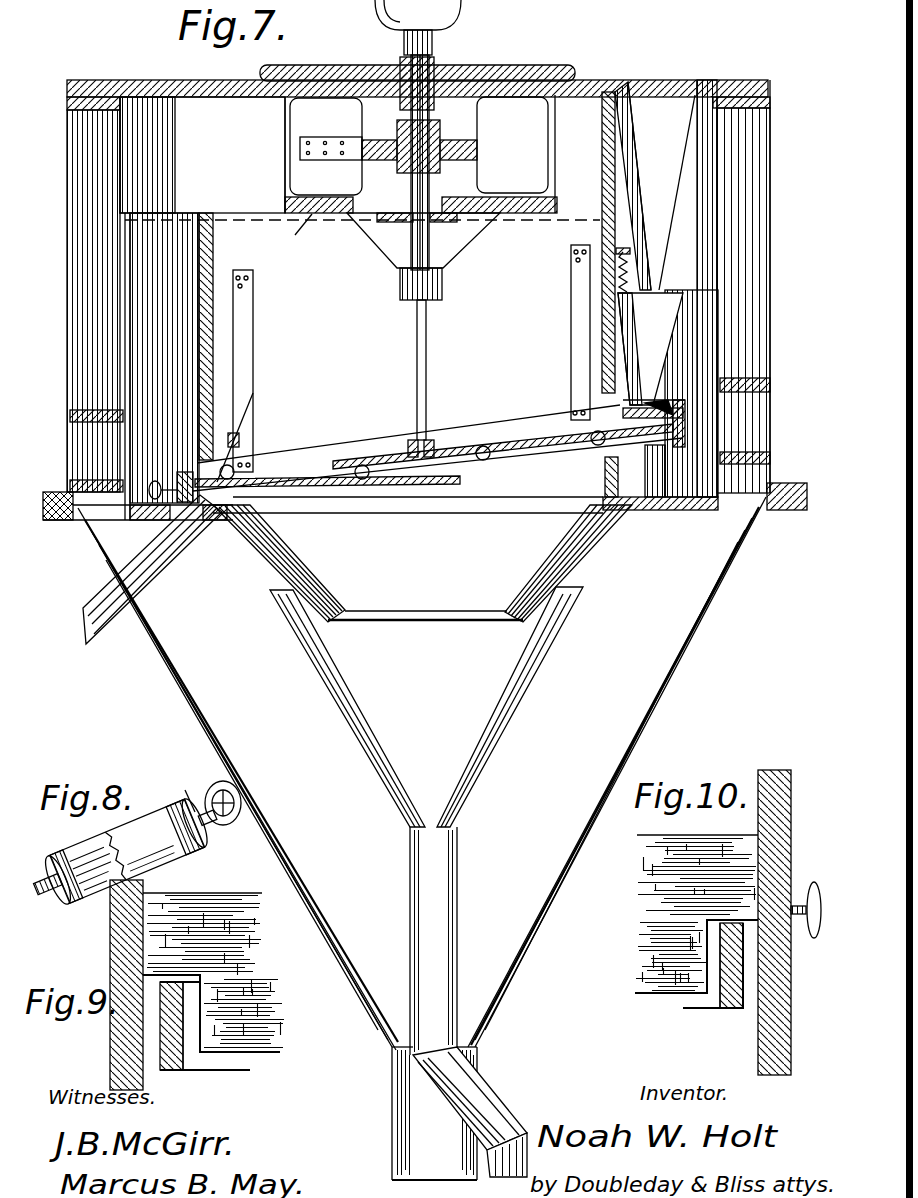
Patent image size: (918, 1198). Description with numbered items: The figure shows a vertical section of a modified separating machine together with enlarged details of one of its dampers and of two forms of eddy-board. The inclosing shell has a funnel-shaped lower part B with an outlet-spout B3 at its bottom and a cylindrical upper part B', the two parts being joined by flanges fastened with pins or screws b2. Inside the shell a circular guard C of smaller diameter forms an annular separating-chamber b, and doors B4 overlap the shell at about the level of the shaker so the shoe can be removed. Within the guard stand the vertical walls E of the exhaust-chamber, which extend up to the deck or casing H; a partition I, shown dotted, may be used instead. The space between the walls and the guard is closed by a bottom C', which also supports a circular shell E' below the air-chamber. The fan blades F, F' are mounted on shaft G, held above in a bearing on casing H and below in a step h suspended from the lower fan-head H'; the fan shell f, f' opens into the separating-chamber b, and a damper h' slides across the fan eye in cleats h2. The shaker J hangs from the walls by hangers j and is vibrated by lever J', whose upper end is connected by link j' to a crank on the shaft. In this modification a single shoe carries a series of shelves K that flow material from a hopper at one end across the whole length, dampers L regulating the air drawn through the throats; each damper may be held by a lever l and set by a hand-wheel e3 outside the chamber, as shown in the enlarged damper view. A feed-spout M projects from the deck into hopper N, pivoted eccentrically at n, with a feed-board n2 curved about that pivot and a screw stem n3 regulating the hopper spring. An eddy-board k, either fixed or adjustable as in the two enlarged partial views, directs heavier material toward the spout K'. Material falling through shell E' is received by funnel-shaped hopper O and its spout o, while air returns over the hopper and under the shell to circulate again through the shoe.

In FIG. 7, the link or arm j' is at (421, 27).
In FIG. 7, the casing H is at (418, 79).
In FIG. 7, the upper part of inclosing shell B' is at (411, 286).
In FIG. 7, the annular separating-chamber b is at (405, 315).
In FIG. 7, the guard C is at (420, 300).
In FIG. 7, the fan shell f' is at (202, 155).
In FIG. 7, the shell E' is at (415, 357).
In FIG. 7, the partition I is at (303, 235).
In FIG. 7, the fan blade F' is at (326, 146).
In FIG. 7, the fan shell f is at (469, 132).
In FIG. 7, the fan-shaft G is at (404, 156).
In FIG. 7, the fan blade F is at (512, 145).
In FIG. 7, the lower head of fan-case H' is at (421, 227).
In FIG. 7, the valve or damper h' is at (424, 240).
In FIG. 7, the ways or cleats h2 is at (396, 222).
In FIG. 7, the bearing or step h is at (436, 285).
In FIG. 7, the vibrating lever J' is at (433, 378).
In FIG. 7, the vertical wall of exhaust-chamber E is at (331, 341).
In FIG. 9, the vertical wall of exhaust-chamber E is at (107, 985).
In FIG. 10, the vertical wall of exhaust-chamber E is at (793, 922).
In FIG. 7, the feed-spout M is at (656, 185).
In FIG. 7, the door B4 is at (431, 393).
In FIG. 7, the hopper N is at (636, 330).
In FIG. 7, the pivot n is at (657, 362).
In FIG. 7, the screw stem or shank n3 is at (627, 260).
In FIG. 7, the feed-board n2 is at (620, 405).
In FIG. 7, the hanger or link j is at (411, 358).
In FIG. 7, the plate or shelf K is at (434, 446).
In FIG. 7, the damper L is at (240, 460).
In FIG. 8, the damper L is at (125, 852).
In FIG. 7, the shaker J is at (438, 465).
In FIG. 9, the shaker J is at (211, 1037).
In FIG. 10, the shaker J is at (696, 982).
In FIG. 7, the bottom C' is at (419, 516).
In FIG. 7, the pins or screws b2 is at (75, 510).
In FIG. 7, the spout K' is at (152, 569).
In FIG. 7, the eddy-board k is at (84, 620).
In FIG. 9, the eddy-board k is at (231, 948).
In FIG. 10, the eddy-board k is at (662, 882).
In FIG. 7, the lower part of inclosing shell B is at (422, 773).
In FIG. 7, the outlet-spout B3 is at (434, 1113).
In FIG. 7, the funnel-shaped hopper O is at (426, 707).
In FIG. 7, the spout o is at (457, 915).
In FIG. 8, the hand-wheel or lever e3 is at (215, 792).
In FIG. 8, the lever l is at (186, 792).